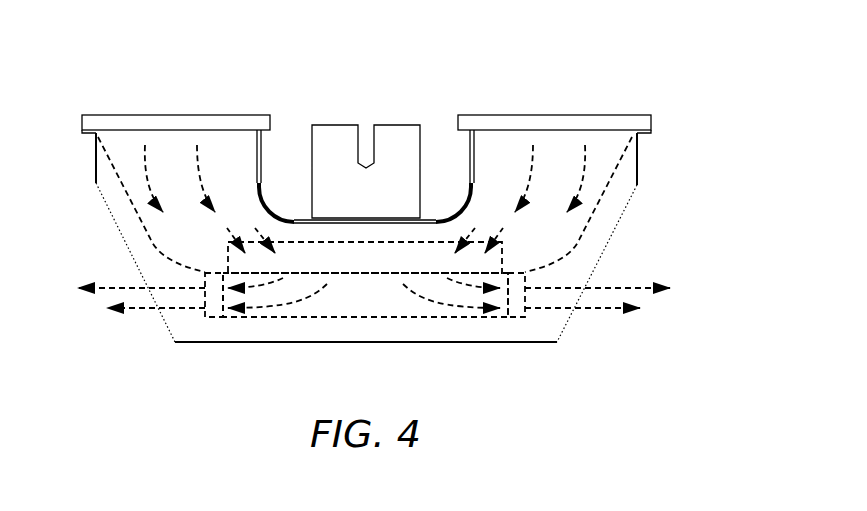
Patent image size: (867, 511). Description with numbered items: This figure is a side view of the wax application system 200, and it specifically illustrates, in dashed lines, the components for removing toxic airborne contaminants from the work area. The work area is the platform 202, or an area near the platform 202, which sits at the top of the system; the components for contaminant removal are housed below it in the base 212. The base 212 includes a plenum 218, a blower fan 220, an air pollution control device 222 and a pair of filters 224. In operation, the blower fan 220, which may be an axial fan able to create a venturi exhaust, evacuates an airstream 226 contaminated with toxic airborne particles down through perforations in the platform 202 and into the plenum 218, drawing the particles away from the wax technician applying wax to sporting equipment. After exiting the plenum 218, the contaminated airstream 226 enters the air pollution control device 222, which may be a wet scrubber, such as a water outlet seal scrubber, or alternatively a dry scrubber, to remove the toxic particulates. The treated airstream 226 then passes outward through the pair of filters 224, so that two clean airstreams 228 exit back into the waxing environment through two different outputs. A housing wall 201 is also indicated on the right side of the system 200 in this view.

The wax application system 200 is at (478, 72).
The housing wall 201 is at (637, 153).
The platform 202 is at (158, 122).
The base 212 is at (563, 320).
The plenum 218 is at (598, 190).
The blower fan 220 is at (365, 250).
The air pollution control device 222 is at (365, 295).
The filter 224 is at (218, 300).
The airstream 226 is at (145, 178).
The clean airstream 228 is at (150, 310).